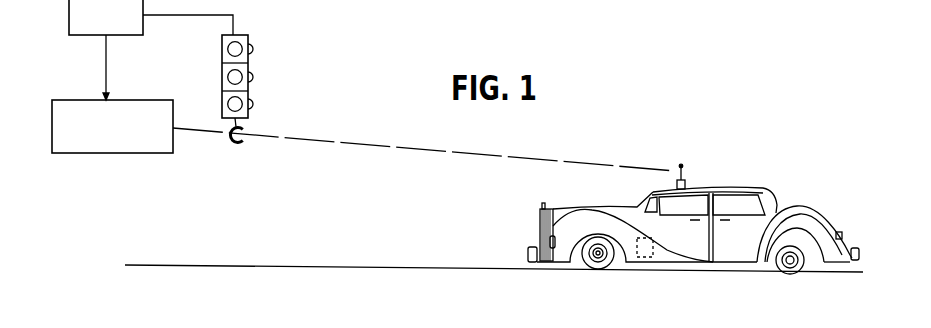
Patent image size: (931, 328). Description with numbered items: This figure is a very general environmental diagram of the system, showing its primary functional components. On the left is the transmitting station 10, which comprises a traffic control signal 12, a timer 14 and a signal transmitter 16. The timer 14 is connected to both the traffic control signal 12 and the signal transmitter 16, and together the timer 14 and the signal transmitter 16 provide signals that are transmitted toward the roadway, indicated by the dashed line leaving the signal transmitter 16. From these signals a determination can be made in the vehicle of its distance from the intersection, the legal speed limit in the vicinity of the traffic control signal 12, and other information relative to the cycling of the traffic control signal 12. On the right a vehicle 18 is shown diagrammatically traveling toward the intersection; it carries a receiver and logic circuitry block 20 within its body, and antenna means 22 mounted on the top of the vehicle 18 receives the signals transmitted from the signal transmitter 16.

The transmitting station 10 is at (250, 157).
The traffic control signal 12 is at (222, 45).
The timer 14 is at (69, 2).
The signal transmitter 16 is at (72, 100).
The vehicle 18 is at (758, 172).
The receiver and logic circuitry 20 is at (645, 257).
The antenna means 22 is at (692, 162).